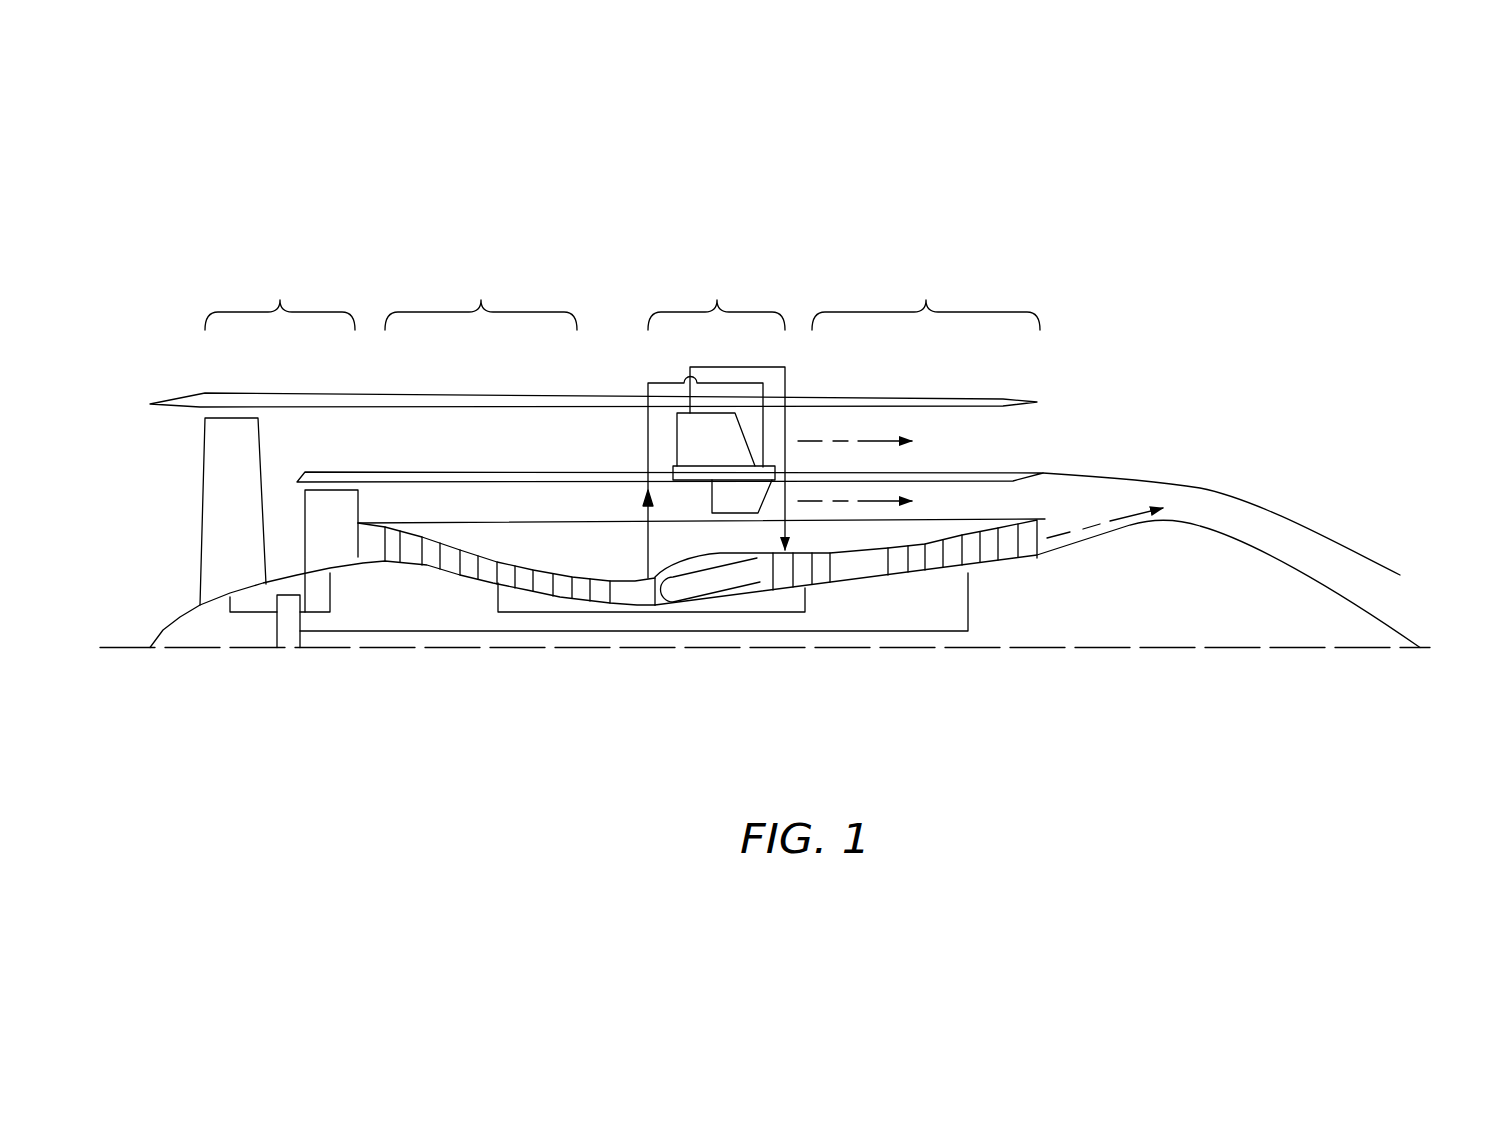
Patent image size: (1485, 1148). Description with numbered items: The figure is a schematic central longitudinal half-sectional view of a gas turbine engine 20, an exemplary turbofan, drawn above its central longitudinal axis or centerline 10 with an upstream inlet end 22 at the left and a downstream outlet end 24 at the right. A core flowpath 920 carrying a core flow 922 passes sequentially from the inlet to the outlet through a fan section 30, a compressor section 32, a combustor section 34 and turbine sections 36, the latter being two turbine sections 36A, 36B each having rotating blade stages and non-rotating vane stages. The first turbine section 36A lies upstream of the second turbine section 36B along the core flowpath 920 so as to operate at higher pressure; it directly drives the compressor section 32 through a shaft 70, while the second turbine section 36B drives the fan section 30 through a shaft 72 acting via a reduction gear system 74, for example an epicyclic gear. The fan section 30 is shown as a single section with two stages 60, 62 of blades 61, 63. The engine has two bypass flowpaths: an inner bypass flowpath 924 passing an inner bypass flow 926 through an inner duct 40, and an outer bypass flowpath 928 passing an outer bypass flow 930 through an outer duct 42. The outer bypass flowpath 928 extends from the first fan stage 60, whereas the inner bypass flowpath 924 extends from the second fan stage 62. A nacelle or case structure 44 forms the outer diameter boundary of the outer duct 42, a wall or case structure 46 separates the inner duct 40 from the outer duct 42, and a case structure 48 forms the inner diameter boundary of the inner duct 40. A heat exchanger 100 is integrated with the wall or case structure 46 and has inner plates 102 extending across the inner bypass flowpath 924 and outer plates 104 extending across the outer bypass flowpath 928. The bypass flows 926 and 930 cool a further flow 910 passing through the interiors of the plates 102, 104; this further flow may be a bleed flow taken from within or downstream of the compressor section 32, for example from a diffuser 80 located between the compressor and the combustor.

The central longitudinal axis 10 is at (1362, 650).
The gas turbine engine 20 is at (252, 218).
The inlet end 22 is at (147, 517).
The outlet end 24 is at (1430, 583).
The fan section 30 is at (280, 300).
The compressor section 32 is at (481, 300).
The combustor section 34 is at (716, 300).
The turbine sections 36 is at (926, 300).
The first turbine section 36A is at (822, 590).
The second turbine section 36B is at (1002, 588).
The inner duct 40 is at (960, 510).
The outer duct 42 is at (375, 453).
The nacelle or case structure 44 is at (595, 403).
The wall or case structure 46 is at (457, 468).
The case structure 48 is at (478, 523).
The first fan stage 60 is at (225, 563).
The blades 61 is at (243, 577).
The second fan stage 62 is at (313, 557).
The blades 63 is at (343, 557).
The shaft 70 is at (797, 613).
The shaft 72 is at (937, 632).
The reduction gear system 74 is at (290, 637).
The diffuser 80 is at (633, 590).
The heat exchanger 100 is at (776, 462).
The inner plates 102 is at (732, 513).
The outer plates 104 is at (688, 439).
The further flow 910 is at (748, 362).
The core flowpath 920 is at (1073, 537).
The core flow 922 is at (1130, 520).
The inner bypass flowpath 924 is at (822, 502).
The inner bypass flow 926 is at (880, 502).
The outer bypass flowpath 928 is at (822, 440).
The outer bypass flow 930 is at (878, 441).